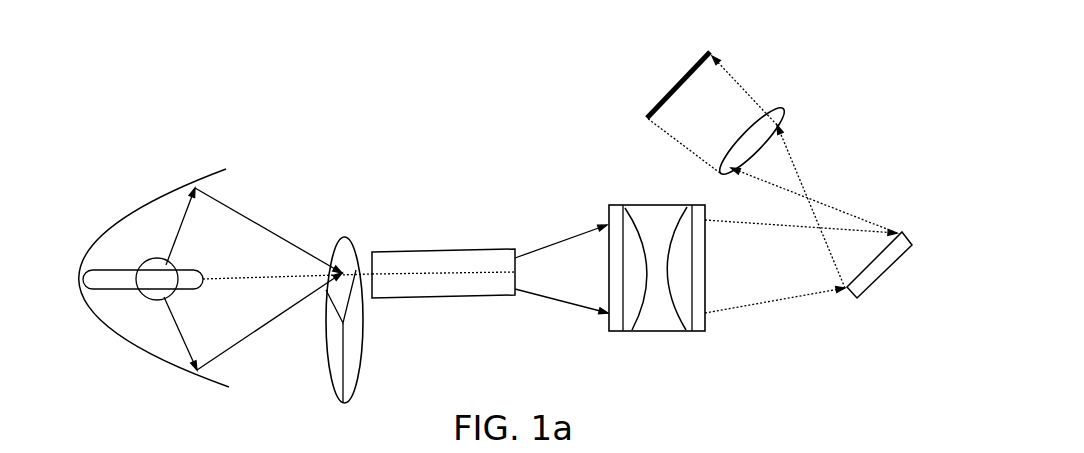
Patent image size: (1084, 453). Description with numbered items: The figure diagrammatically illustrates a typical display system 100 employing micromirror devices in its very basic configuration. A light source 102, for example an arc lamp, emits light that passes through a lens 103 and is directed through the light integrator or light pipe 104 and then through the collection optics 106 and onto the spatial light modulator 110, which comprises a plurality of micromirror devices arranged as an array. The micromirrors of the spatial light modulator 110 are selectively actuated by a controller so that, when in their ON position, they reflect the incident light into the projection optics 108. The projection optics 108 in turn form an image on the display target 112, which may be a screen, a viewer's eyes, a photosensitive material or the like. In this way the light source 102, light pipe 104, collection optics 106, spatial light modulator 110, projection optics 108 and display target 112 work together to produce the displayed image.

The illumination system 100 is at (410, 150).
The light source 102 is at (165, 195).
The condenser lens 103 is at (362, 362).
The light pipe 104 is at (412, 250).
The collection optics 106 is at (653, 203).
The projection optics 108 is at (775, 103).
The spatial light modulator 110 is at (888, 273).
The display target 112 is at (688, 73).